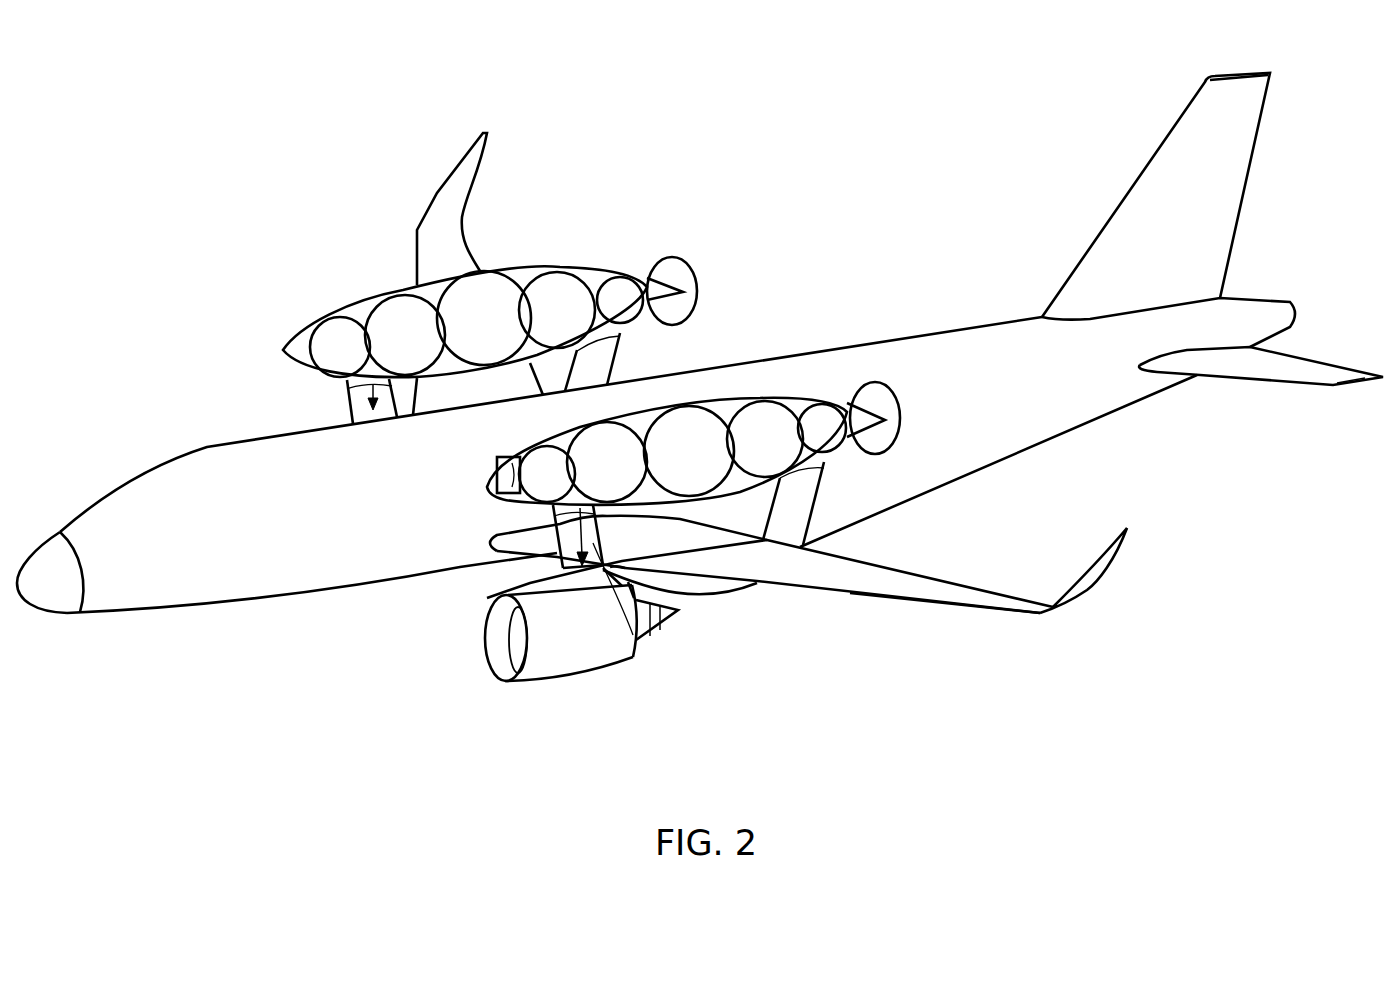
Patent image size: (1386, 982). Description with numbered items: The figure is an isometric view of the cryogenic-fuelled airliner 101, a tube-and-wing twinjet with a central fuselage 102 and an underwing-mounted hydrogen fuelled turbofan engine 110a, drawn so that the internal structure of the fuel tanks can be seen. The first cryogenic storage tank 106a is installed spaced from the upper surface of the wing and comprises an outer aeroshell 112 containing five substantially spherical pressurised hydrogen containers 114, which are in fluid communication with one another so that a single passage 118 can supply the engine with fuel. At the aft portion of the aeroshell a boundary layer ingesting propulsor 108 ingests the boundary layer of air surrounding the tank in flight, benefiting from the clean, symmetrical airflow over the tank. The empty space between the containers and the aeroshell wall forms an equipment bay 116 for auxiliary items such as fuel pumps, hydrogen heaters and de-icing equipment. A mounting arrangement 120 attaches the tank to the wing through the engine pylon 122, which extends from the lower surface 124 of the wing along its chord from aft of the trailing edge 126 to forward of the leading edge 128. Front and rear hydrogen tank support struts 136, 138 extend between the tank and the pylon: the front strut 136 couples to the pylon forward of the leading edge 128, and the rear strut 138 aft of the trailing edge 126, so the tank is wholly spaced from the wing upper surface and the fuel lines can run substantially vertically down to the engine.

The airliner 101 is at (750, 171).
The fuselage 102 is at (205, 460).
The first cryogenic storage tank 106a is at (603, 443).
The boundary layer ingesting propulsor 108 is at (873, 382).
The hydrogen fuelled turbofan engine 110a is at (575, 682).
The outer aeroshell 112 is at (717, 404).
The spherical pressurised hydrogen container 114 is at (765, 420).
The equipment bay 116 is at (496, 481).
The passage 118 is at (633, 635).
The mounting arrangement 120 is at (778, 549).
The engine pylon 122 is at (687, 594).
The lower surface of the wing 124 is at (851, 594).
The trailing edge 126 is at (977, 582).
The leading edge 128 is at (923, 603).
The front hydrogen tank support strut 136 is at (552, 560).
The rear hydrogen tank support strut 138 is at (828, 492).